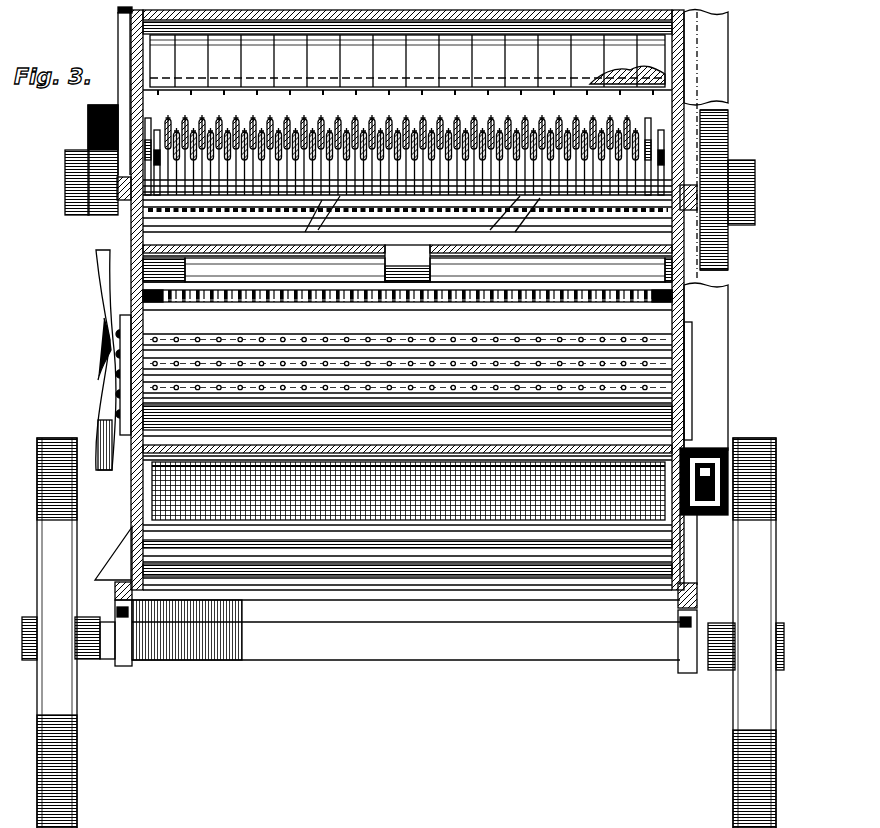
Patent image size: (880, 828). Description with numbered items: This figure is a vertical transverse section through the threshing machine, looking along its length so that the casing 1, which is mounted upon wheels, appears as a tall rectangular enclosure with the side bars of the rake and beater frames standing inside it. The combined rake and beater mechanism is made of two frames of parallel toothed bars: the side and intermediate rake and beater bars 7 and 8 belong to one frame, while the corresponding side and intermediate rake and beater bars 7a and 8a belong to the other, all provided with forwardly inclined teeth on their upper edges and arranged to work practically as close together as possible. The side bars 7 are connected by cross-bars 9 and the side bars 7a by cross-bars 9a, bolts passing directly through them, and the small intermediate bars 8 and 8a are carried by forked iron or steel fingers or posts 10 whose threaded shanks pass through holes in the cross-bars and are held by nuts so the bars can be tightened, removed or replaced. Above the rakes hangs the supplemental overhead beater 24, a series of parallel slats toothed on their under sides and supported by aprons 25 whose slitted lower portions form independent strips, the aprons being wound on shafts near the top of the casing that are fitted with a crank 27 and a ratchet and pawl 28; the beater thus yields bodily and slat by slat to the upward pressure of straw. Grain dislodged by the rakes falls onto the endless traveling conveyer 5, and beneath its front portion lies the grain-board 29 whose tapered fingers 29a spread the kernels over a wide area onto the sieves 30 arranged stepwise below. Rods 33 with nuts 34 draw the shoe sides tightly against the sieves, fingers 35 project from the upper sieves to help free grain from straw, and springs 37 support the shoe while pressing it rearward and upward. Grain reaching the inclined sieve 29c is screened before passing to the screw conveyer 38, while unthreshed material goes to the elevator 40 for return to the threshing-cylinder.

The casing 1 is at (700, 125).
The endless traveling conveyer 5 is at (340, 262).
The side rake and beater bars 7 is at (149, 120).
The side rake and beater bars 7a is at (158, 132).
The intermediate rake and beater bars 8 is at (222, 128).
The intermediate rake and beater bars 8a is at (262, 132).
The cross-bars 9 is at (160, 206).
The cross-bars 9a is at (170, 222).
The fingers or posts 10 is at (422, 223).
The supplemental overhead beater 24 is at (608, 74).
The aprons 25 is at (407, 58).
The crank 27 is at (280, 264).
The ratchet and pawl 28 is at (560, 264).
The grain-board 29 is at (450, 304).
The tapered fingers 29a is at (180, 306).
The inclined sieve 29c is at (408, 491).
The sieves 30 is at (346, 346).
The rods 33 is at (292, 396).
The nuts 34 is at (100, 352).
The fingers 35 is at (380, 352).
The springs 37 is at (118, 328).
The screw conveyer 38 is at (403, 606).
The elevator 40 is at (728, 440).